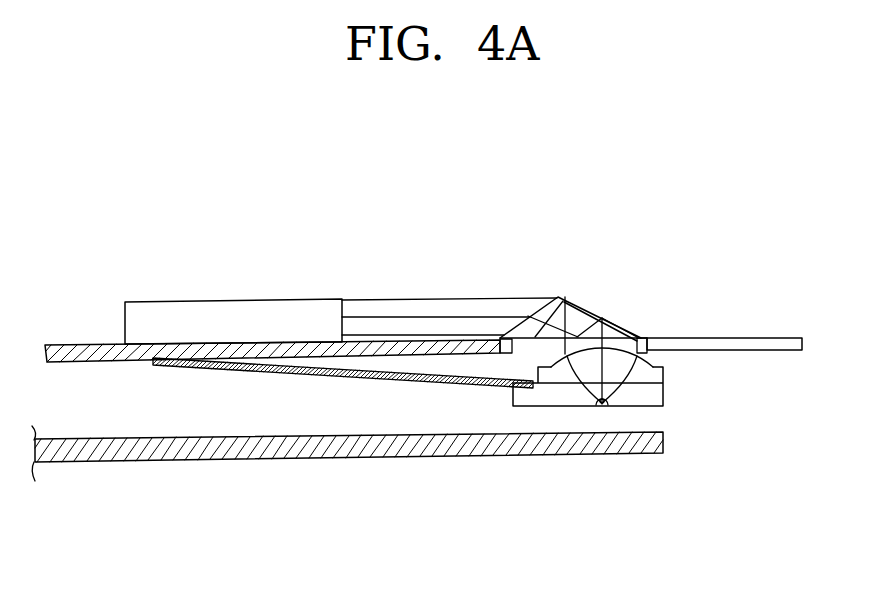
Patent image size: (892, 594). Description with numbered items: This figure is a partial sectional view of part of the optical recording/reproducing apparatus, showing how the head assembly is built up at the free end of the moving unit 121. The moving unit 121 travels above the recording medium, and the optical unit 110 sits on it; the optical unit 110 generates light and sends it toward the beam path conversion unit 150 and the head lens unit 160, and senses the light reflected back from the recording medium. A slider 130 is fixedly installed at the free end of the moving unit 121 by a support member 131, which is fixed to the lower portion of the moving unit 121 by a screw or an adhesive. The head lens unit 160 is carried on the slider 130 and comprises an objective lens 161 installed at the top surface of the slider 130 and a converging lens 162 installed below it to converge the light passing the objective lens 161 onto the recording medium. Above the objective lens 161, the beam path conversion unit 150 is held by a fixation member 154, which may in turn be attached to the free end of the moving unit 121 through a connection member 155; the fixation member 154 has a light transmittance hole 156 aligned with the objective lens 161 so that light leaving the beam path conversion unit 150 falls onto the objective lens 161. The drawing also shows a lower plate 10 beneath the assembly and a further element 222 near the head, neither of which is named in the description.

The substrate / base plate 10 is at (197, 457).
The optical unit 110 is at (228, 290).
The moving unit 121 is at (78, 344).
The support member 131 is at (344, 373).
The slider 130 is at (684, 381).
The beam path conversion unit 150 is at (600, 302).
The fixation member 154 is at (757, 340).
The connection member 155 is at (398, 334).
The light transmittance hole 156 is at (653, 337).
The head lens unit 160 is at (633, 445).
The objective lens 161 is at (648, 374).
The converging lens 162 is at (603, 405).
The support member 222 is at (561, 343).